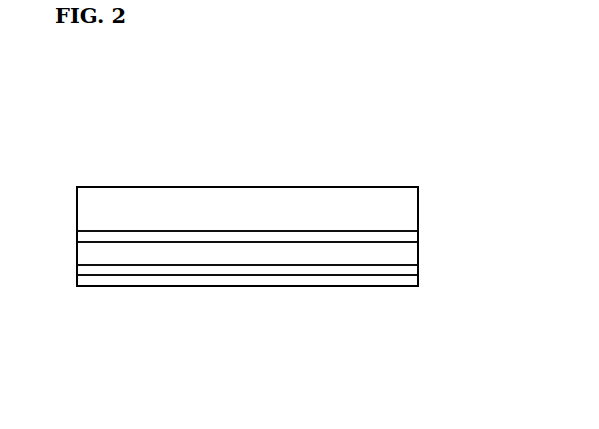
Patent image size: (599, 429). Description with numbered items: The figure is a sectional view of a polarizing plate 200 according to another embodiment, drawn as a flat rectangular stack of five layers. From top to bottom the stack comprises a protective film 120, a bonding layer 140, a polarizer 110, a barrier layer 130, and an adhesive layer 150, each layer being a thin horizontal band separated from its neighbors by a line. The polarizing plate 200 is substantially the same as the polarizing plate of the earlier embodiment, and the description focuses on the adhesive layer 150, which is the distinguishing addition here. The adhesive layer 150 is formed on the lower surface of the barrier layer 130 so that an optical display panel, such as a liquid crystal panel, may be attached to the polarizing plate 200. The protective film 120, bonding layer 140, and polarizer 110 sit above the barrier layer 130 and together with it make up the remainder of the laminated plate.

The polarizing plate 200 is at (382, 160).
The protective film 120 is at (398, 209).
The bonding layer 140 is at (400, 238).
The polarizer 110 is at (412, 250).
The barrier layer 130 is at (412, 268).
The adhesive layer 150 is at (408, 275).